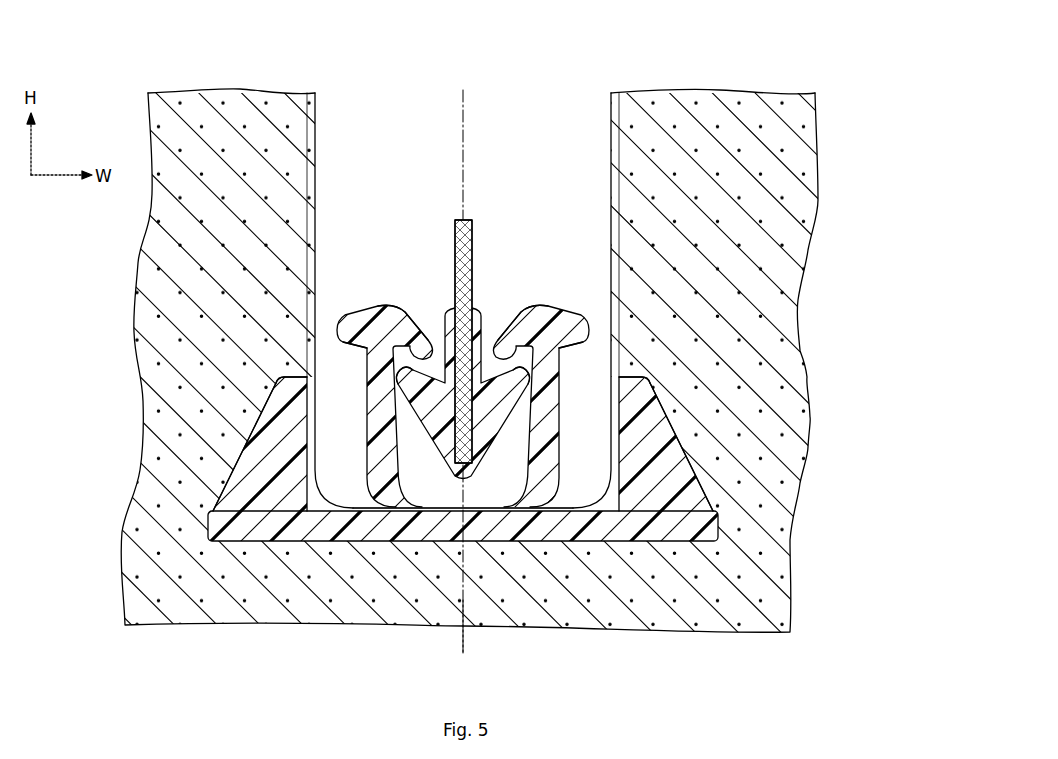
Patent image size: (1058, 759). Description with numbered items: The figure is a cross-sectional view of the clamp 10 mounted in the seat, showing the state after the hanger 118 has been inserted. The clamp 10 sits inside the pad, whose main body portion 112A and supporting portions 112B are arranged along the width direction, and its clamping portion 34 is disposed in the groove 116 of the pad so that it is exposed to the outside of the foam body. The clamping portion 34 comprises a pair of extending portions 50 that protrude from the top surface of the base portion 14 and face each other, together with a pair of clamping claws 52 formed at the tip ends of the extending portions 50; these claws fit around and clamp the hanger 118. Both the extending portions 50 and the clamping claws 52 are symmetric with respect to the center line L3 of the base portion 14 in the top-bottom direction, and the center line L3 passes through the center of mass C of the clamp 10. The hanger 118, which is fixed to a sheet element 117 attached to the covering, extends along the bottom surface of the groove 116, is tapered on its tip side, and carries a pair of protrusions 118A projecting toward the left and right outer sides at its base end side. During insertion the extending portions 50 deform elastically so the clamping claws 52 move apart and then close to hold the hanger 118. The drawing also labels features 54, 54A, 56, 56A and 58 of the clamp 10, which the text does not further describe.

The clamp 10 is at (353, 176).
The base portion 14 is at (606, 543).
The clamping portion 34 is at (380, 248).
The extending portions 50 is at (382, 458).
The clamping claws 52 is at (420, 306).
The arm 54 is at (345, 306).
The arm neck portion 54A is at (345, 344).
The foot portion 56 is at (258, 438).
The foot top surface 56A is at (286, 364).
The foot inclined surface 58 is at (248, 458).
The main body portion 112A is at (797, 240).
The supporting portions 112B is at (148, 217).
The groove 116 is at (587, 132).
The sheet element 117 is at (480, 230).
The hanger 118 is at (487, 306).
The protrusions 118A is at (413, 404).
The center of mass C is at (458, 530).
The center line L3 is at (463, 641).